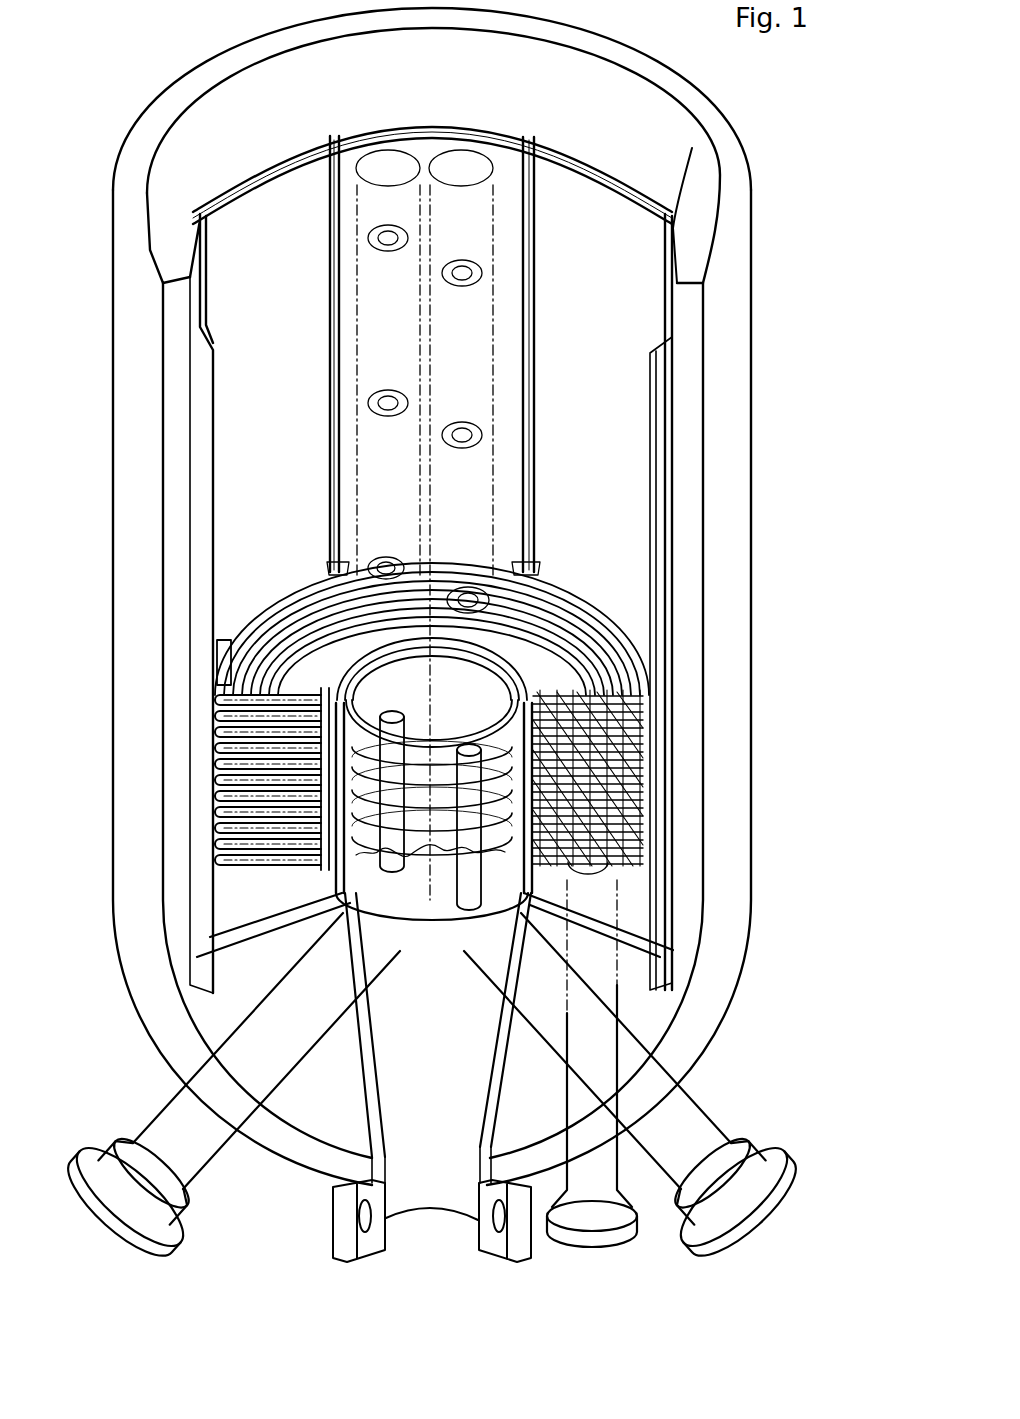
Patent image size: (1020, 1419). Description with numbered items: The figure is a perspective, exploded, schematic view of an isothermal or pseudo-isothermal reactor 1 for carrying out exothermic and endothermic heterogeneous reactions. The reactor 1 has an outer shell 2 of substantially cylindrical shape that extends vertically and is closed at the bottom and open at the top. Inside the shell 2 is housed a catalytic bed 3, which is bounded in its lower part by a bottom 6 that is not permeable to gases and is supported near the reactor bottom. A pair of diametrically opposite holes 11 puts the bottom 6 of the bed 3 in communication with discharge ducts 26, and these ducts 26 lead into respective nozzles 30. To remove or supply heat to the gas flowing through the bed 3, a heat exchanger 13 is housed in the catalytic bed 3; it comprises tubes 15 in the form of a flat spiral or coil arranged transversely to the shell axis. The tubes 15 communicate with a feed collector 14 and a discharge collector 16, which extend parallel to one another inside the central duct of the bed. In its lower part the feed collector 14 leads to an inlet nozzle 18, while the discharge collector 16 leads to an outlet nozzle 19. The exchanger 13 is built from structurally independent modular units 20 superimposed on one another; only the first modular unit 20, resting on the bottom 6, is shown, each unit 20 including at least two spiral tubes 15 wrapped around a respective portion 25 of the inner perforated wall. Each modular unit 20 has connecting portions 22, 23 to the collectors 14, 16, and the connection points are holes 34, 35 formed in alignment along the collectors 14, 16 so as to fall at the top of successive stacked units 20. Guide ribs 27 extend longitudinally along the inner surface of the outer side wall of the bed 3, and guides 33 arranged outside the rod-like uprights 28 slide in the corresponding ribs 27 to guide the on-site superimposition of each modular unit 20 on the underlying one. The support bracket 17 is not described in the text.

The isothermal reactor 1 is at (823, 150).
The outer shell 2 is at (736, 381).
The catalytic bed 3 is at (272, 200).
The bottom 6 is at (276, 898).
The holes 11 is at (578, 868).
The heat exchanger 13 is at (596, 600).
The feed collector 14 is at (398, 165).
The tubes 15 is at (292, 600).
The discharge collector 16 is at (478, 165).
The support bracket 17 is at (340, 1216).
The inlet nozzle 18 is at (110, 1175).
The outlet nozzle 19 is at (760, 1150).
The modular unit 20 is at (592, 604).
The connecting portion 22 is at (393, 882).
The connecting portion 23 is at (456, 898).
The inner portion of perforated cylindrical wall 25 is at (450, 922).
The discharge ducts 26 is at (608, 967).
The guide ribs 27 is at (330, 352).
The uprights 28 is at (360, 570).
The nozzles 30 is at (632, 1222).
The guides 33 is at (560, 590).
The holes 34 is at (392, 250).
The holes 35 is at (466, 268).